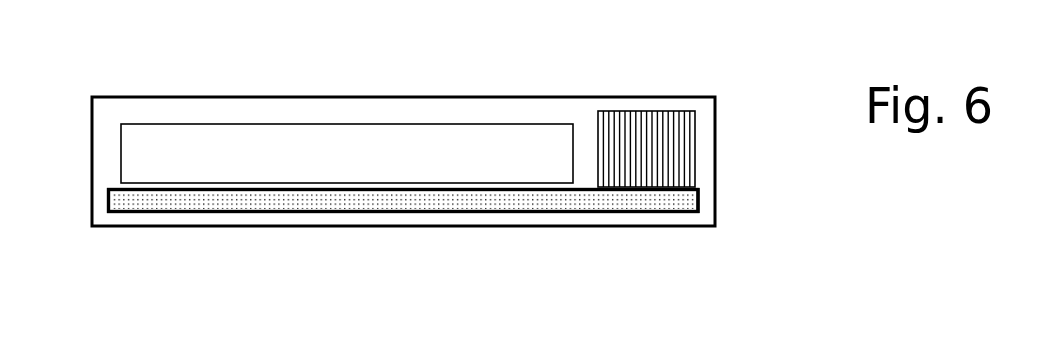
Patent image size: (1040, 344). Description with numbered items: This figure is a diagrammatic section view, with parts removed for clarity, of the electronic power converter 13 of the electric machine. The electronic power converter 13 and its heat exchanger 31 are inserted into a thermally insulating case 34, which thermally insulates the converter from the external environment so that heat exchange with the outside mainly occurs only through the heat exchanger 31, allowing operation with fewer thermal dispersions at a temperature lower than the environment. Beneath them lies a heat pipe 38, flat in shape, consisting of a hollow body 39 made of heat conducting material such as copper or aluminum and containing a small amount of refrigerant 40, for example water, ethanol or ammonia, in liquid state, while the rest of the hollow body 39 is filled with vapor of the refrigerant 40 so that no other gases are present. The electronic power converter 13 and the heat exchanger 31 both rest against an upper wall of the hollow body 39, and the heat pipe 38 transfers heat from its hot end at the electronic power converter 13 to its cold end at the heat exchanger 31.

The thermally insulating case 34 is at (112, 97).
The electronic power converter 13 is at (347, 153).
The heat exchanger 31 is at (682, 140).
The refrigerant 40 is at (412, 202).
The hollow body 39 is at (602, 208).
The heat pipe 38 is at (335, 244).